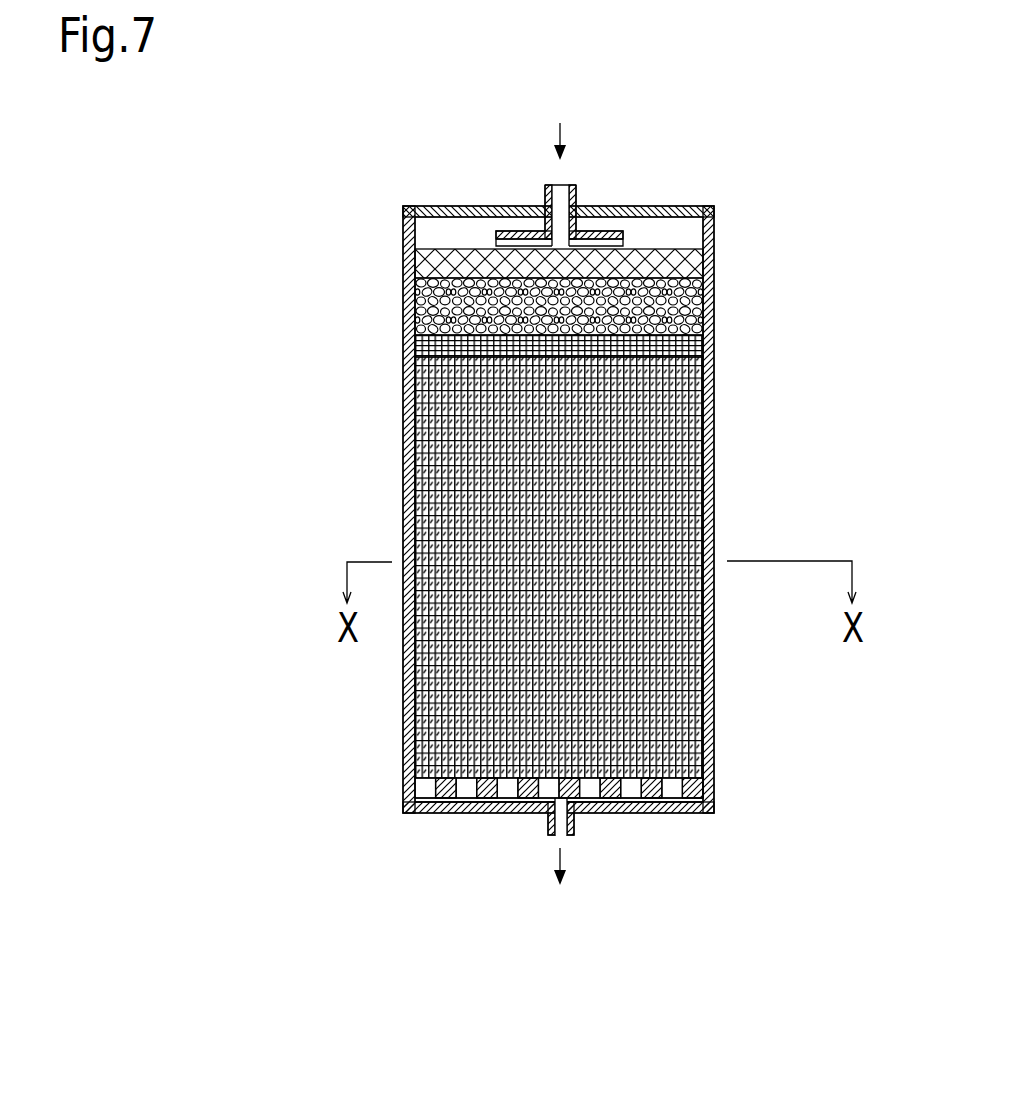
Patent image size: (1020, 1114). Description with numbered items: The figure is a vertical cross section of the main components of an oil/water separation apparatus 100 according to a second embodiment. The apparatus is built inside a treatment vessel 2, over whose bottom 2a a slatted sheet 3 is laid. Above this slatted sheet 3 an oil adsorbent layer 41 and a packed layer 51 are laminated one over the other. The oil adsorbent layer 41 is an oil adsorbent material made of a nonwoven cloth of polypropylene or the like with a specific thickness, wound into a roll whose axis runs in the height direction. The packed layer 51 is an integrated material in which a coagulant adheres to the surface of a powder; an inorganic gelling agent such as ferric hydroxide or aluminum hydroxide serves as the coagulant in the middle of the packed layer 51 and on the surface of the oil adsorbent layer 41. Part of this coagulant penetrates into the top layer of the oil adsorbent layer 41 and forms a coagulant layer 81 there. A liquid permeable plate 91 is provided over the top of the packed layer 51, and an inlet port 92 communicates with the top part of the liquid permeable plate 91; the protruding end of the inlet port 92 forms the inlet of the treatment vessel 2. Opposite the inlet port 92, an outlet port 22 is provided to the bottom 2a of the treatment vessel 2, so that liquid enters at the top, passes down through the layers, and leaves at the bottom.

The oil/water separation apparatus 100 is at (728, 200).
The treatment vessel 2 is at (710, 622).
The bottom 2a is at (443, 808).
The slatted sheet 3 is at (685, 785).
The outlet port 22 is at (550, 825).
The oil adsorbent layer 41 is at (660, 497).
The packed layer 51 is at (687, 296).
The coagulant layer 81 is at (655, 358).
The liquid permeable plate 91 is at (424, 262).
The inlet port 92 is at (576, 193).